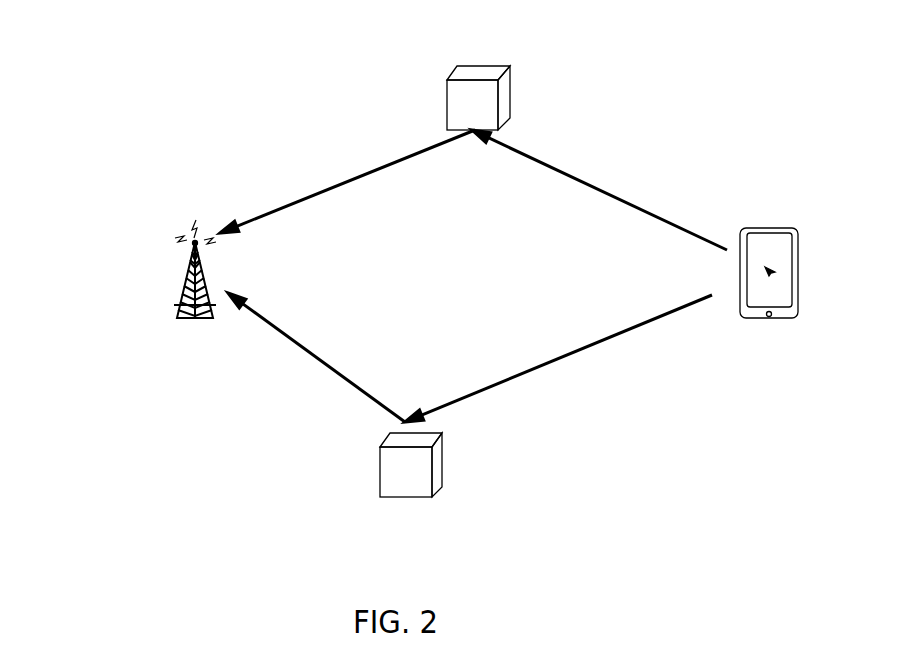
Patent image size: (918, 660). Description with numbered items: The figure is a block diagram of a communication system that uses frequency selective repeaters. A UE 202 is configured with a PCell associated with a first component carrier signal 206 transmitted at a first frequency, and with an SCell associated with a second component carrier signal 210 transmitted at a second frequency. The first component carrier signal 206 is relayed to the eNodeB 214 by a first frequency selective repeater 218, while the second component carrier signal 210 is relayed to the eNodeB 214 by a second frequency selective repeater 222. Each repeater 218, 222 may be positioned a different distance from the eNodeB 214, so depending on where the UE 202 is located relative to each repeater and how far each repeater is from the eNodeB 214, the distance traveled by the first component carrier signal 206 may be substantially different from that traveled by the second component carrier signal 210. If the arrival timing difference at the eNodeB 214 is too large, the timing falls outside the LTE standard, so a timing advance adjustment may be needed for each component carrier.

The UE 202 is at (770, 228).
The first component carrier signal 206 is at (520, 374).
The second component carrier signal 210 is at (591, 186).
The eNodeB 214 is at (180, 288).
The first frequency selective repeater 218 is at (380, 469).
The second frequency selective repeater 222 is at (447, 100).